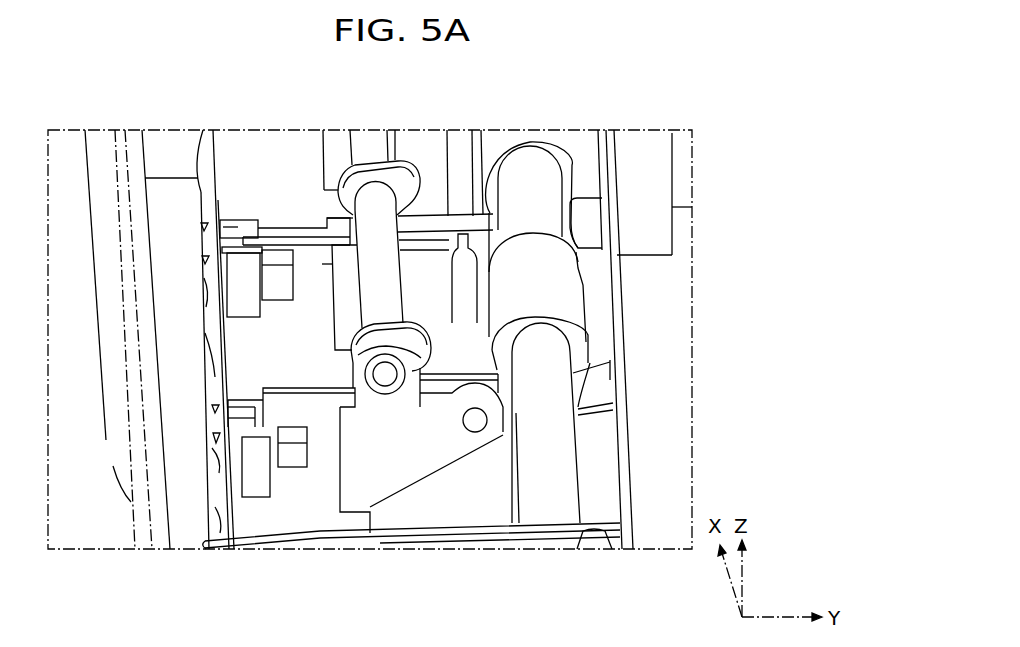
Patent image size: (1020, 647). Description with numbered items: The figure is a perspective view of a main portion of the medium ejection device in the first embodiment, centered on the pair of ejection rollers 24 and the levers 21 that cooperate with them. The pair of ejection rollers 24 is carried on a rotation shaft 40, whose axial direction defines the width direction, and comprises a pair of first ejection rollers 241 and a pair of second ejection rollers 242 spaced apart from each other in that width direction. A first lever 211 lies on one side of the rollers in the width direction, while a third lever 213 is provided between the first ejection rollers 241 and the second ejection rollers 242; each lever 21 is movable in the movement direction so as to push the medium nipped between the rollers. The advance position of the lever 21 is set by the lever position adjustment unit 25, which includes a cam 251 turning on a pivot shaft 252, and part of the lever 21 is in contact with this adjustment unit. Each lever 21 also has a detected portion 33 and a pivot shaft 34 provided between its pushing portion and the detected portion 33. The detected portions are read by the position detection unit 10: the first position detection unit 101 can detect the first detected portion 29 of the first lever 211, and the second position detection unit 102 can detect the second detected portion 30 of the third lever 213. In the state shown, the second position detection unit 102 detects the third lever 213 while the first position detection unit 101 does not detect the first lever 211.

The pivot shaft 252 is at (370, 144).
The lever position adjustment unit 25 is at (564, 222).
The cam 251 is at (400, 161).
The pair of ejection rollers 24 is at (632, 207).
The pair of second ejection rollers 242 is at (562, 146).
The pair of first ejection rollers 241 is at (565, 282).
The lever 21 is at (682, 339).
The third lever 213 is at (605, 218).
The first lever 211 is at (622, 372).
The rotation shaft 40 is at (563, 434).
The detected portion 33 is at (206, 342).
The second detected portion 30 is at (240, 242).
The first detected portion 29 is at (278, 407).
The position detection unit 10 is at (206, 389).
The second position detection unit 102 is at (273, 277).
The first position detection unit 101 is at (285, 453).
The pivot shaft 34 is at (476, 432).